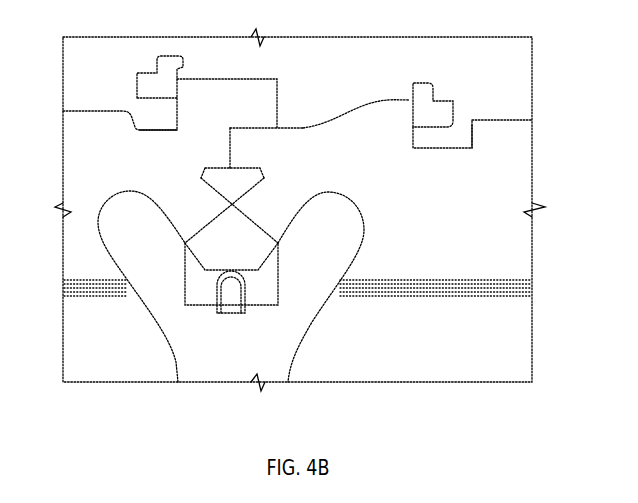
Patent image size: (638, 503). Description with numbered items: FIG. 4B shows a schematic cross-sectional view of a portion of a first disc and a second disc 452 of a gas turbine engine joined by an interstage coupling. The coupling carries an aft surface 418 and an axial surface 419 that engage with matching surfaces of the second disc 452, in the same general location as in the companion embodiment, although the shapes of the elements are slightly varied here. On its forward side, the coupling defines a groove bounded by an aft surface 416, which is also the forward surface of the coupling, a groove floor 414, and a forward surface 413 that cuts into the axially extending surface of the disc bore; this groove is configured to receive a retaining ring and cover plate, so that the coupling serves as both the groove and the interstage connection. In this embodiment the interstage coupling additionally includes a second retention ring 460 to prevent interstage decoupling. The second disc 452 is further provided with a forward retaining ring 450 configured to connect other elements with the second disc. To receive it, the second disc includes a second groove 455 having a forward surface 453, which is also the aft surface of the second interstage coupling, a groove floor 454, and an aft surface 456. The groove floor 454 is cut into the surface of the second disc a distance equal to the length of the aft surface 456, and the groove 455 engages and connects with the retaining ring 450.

The forward surface 413 is at (126, 115).
The groove floor 414 is at (152, 135).
The aft surface 416 is at (167, 120).
The aft surface 418 is at (232, 163).
The axial surface 419 is at (261, 125).
The retaining ring 450 is at (446, 85).
The second disc 452 is at (297, 264).
The forward surface 453 is at (400, 108).
The groove floor 454 is at (443, 150).
The second groove 455 is at (465, 162).
The aft surface 456 is at (478, 130).
The second retention ring 460 is at (233, 328).